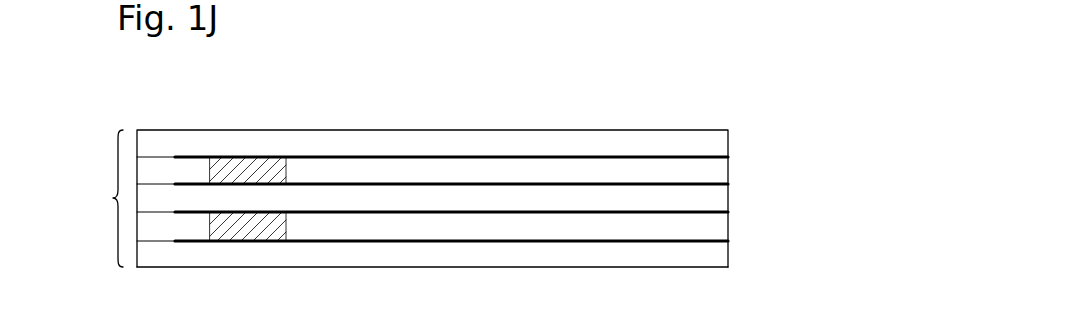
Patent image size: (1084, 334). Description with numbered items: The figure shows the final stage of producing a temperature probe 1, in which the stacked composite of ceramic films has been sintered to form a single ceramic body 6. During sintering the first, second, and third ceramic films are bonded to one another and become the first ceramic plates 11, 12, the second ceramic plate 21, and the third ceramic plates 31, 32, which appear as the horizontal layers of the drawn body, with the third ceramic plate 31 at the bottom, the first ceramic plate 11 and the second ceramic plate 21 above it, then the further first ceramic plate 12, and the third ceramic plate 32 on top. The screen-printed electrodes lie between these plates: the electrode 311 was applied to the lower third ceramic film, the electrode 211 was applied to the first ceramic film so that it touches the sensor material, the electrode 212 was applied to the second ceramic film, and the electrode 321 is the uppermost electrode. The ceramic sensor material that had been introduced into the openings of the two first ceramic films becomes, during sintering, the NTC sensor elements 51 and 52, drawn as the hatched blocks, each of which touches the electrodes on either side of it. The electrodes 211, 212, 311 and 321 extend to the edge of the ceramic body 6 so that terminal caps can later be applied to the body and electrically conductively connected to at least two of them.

The temperature probe 1 is at (170, 88).
The ceramic body 6 is at (105, 196).
The first ceramic plate 11 is at (710, 225).
The first ceramic plate 12 is at (713, 173).
The second ceramic plate 21 is at (710, 203).
The third ceramic plate 31 is at (710, 253).
The third ceramic plate 32 is at (707, 142).
The NTC sensor element 51 is at (268, 228).
The NTC sensor element 52 is at (258, 176).
The electrode 211 is at (645, 213).
The electrode 212 is at (432, 183).
The electrode 311 is at (542, 242).
The electrode 321 is at (560, 156).